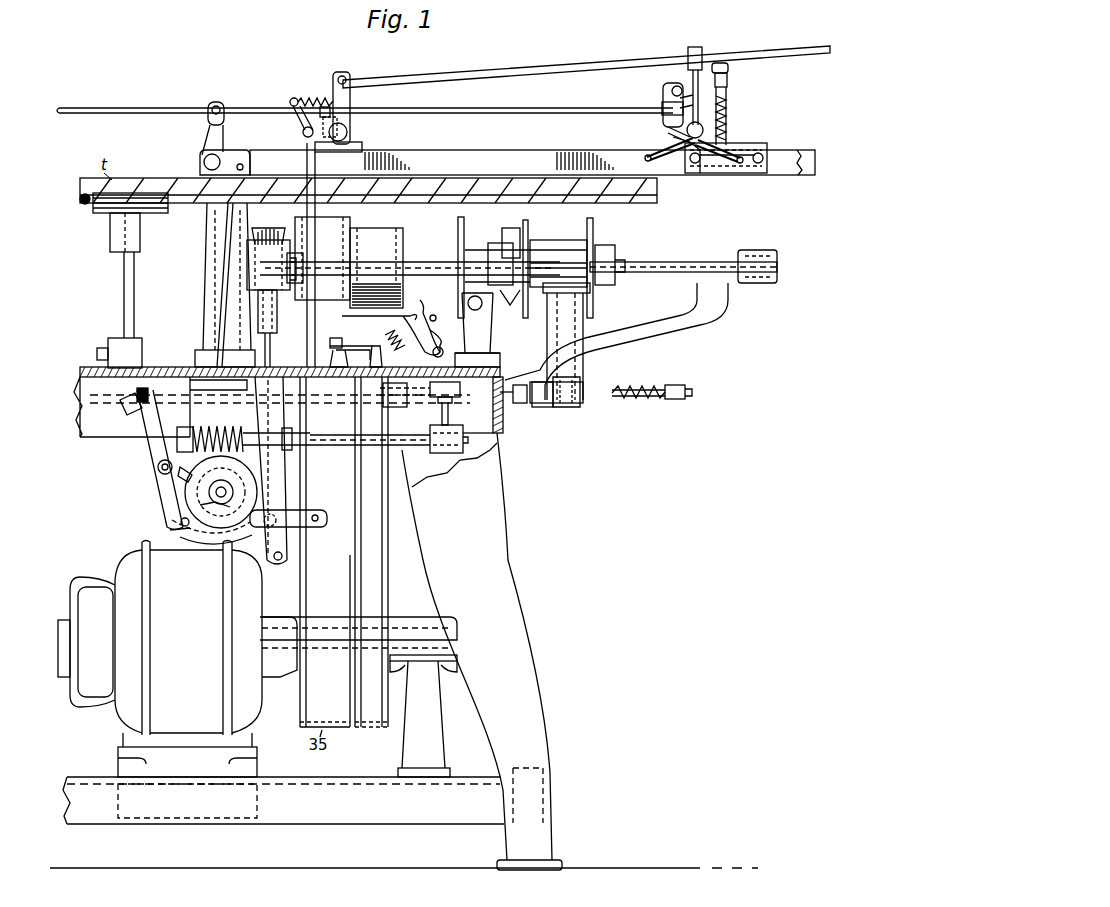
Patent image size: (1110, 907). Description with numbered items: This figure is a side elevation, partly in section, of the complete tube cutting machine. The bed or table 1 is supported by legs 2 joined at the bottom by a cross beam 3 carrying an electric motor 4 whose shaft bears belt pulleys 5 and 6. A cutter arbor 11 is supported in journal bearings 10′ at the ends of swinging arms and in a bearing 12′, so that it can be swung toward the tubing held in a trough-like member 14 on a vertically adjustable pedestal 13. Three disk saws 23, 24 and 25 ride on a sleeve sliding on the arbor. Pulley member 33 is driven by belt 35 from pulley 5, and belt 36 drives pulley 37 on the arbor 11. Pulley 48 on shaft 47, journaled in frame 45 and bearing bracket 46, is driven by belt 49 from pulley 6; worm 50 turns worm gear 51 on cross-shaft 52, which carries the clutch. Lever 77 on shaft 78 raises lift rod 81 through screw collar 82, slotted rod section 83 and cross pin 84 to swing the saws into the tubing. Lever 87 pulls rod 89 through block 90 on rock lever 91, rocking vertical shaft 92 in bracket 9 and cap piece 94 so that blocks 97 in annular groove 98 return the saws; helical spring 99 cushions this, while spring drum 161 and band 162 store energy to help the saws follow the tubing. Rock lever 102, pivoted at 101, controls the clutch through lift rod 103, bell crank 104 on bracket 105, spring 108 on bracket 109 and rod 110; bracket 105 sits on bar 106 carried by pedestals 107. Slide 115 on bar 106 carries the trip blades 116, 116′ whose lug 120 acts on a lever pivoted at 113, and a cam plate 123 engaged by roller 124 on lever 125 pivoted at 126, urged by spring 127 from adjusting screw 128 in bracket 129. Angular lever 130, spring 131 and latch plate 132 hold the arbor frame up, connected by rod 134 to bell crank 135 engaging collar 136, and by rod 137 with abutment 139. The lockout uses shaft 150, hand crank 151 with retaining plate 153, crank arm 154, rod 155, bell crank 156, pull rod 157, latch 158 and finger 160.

The bed or table 1 is at (85, 367).
The legs 2 is at (515, 590).
The cross beam 3 is at (325, 815).
The electric motor 4 is at (200, 672).
The belt pulley 5 is at (300, 710).
The belt pulley 6 is at (392, 718).
The bracket 9 is at (700, 320).
The journal bearings 10′ is at (247, 268).
The arbor 11 is at (670, 262).
The bearing 12′ is at (760, 252).
The vertically adjustable pedestal 13 is at (124, 292).
The trough-like member 14 is at (100, 216).
The saw 23 is at (462, 230).
The middle saw 24 is at (530, 230).
The saw 25 is at (595, 228).
The pulley member 33 is at (296, 232).
The belt 35 is at (335, 250).
The belt 36 is at (388, 232).
The pulley 37 is at (405, 235).
The supporting frame 45 is at (268, 462).
The bearing bracket 46 is at (472, 470).
The shaft 47 is at (435, 453).
The pulley 48 is at (382, 510).
The belt 49 is at (377, 538).
The worm 50 is at (185, 486).
The worm gear 51 is at (209, 492).
The cross-shaft 52 is at (200, 505).
The lever 77 is at (210, 540).
The shaft 78 is at (182, 525).
The lift rod 81 is at (271, 350).
The screw collar 82 is at (270, 318).
The slotted rod section 83 is at (262, 246).
The cross pin 84 is at (247, 262).
The lever 87 is at (130, 416).
The rod 89 is at (685, 390).
The block 90 is at (540, 407).
The rock lever 91 is at (570, 407).
The vertical shaft 92 is at (583, 378).
The cap piece 94 is at (578, 300).
The blocks 97 is at (508, 232).
The annular groove 98 is at (505, 260).
The helical spring 99 is at (628, 400).
The pivot 101 is at (500, 320).
The rock lever 102 is at (305, 530).
The lift rod 103 is at (300, 480).
The bell crank 104 is at (352, 99).
The bracket 105 is at (355, 142).
The bar 106 is at (452, 160).
The pedestals 107 is at (214, 218).
The spring 108 is at (320, 95).
The bracket 109 is at (293, 124).
The rod 110 is at (526, 66).
The pivot 113 is at (688, 88).
The adjustable slide 115 is at (745, 175).
The trip plate or radial arm 116 is at (715, 170).
The radial arm or blade 116′ is at (700, 75).
The lug 120 is at (668, 123).
The cam plate 123 is at (668, 134).
The roller 124 is at (702, 175).
The lever 125 is at (740, 155).
The pivot 126 is at (765, 165).
The spring 127 is at (728, 124).
The adjusting screw 128 is at (730, 95).
The bracket 129 is at (730, 108).
The angular lever 130 is at (480, 318).
The tension spring 131 is at (395, 348).
The latch plate 132 is at (420, 300).
The rod 134 is at (362, 318).
The bell crank 135 is at (349, 354).
The collar 136 is at (336, 338).
The rod 137 is at (560, 243).
The collar or abutment 139 is at (612, 248).
The shaft 150 is at (158, 466).
The hand crank 151 is at (180, 437).
The notched retaining plate 153 is at (137, 392).
The crank arm 154 is at (178, 478).
The rod 155 is at (220, 312).
The bell crank 156 is at (210, 137).
The pull rod 157 is at (537, 108).
The swinging latch 158 is at (663, 95).
The finger 160 is at (320, 132).
The spring drum 161 is at (390, 407).
The band or ribbon 162 is at (290, 395).